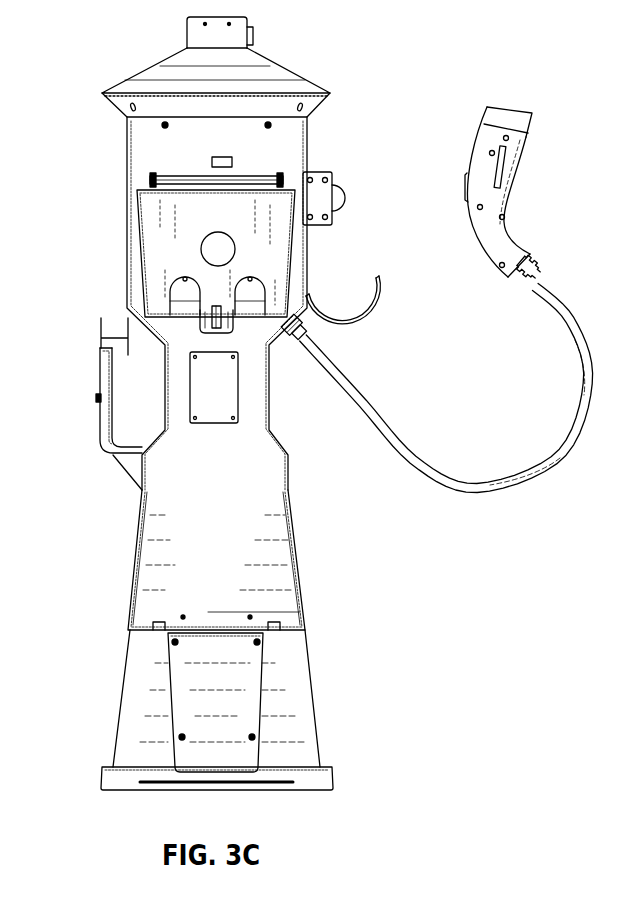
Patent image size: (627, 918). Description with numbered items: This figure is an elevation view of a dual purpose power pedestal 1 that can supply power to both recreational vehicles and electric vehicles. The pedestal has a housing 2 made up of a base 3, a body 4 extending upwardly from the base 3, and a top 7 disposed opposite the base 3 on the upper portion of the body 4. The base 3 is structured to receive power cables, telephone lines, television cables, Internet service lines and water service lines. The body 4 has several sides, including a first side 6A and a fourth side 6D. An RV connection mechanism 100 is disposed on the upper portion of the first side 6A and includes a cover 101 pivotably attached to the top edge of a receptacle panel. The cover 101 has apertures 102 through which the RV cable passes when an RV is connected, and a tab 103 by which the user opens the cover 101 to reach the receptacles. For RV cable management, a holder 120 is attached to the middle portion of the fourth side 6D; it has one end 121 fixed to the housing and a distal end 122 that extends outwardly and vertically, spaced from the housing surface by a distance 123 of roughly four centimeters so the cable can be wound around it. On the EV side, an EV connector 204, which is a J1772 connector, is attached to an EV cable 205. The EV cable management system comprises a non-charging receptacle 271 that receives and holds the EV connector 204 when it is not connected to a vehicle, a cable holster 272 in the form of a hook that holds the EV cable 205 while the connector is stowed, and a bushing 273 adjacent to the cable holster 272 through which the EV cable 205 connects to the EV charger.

The dual purpose power pedestal 1 is at (87, 34).
The top 7 is at (283, 70).
The RV connection mechanism 100 is at (263, 177).
The cover 101 is at (160, 221).
The apertures 102 is at (205, 287).
The tab 103 is at (235, 325).
The holder 120 is at (96, 398).
The one end 121 is at (130, 463).
The distal end 122 is at (105, 355).
The distance 123 is at (115, 335).
The housing 2 is at (288, 448).
The body 4 is at (298, 517).
The fourth side 6D is at (137, 558).
The first side 6A is at (284, 575).
The base 3 is at (233, 783).
The EV connector 204 is at (515, 150).
The EV cable 205 is at (497, 496).
The non-charging receptacle 271 is at (343, 196).
The cable holster 272 is at (372, 300).
The bushing 273 is at (313, 333).